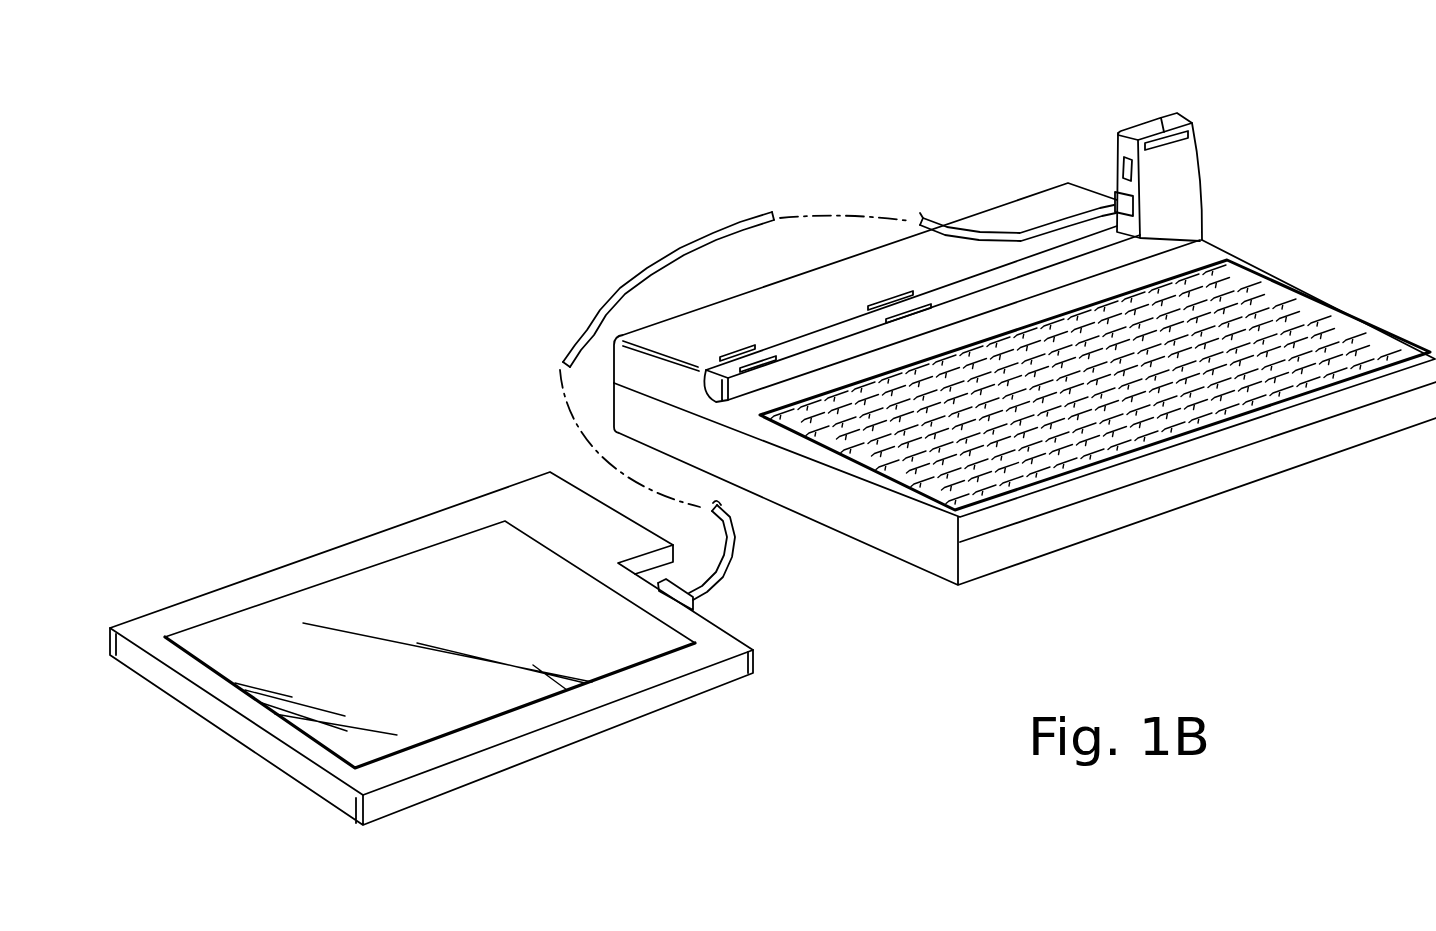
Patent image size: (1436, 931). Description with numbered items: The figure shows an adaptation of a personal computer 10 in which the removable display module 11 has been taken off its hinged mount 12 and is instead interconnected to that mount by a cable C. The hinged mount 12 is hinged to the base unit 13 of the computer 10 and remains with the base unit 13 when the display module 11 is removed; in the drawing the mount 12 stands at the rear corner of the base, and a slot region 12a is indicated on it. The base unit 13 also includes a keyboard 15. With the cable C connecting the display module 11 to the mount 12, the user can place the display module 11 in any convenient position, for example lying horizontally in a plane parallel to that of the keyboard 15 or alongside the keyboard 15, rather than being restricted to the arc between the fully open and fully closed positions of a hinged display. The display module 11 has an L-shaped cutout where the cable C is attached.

The personal computer 10 is at (1025, 333).
The display module 11 is at (283, 558).
The mount 12 is at (1192, 148).
The slot 12a is at (1158, 113).
The base unit 13 is at (855, 513).
The keyboard 15 is at (1313, 313).
The cable C is at (621, 284).